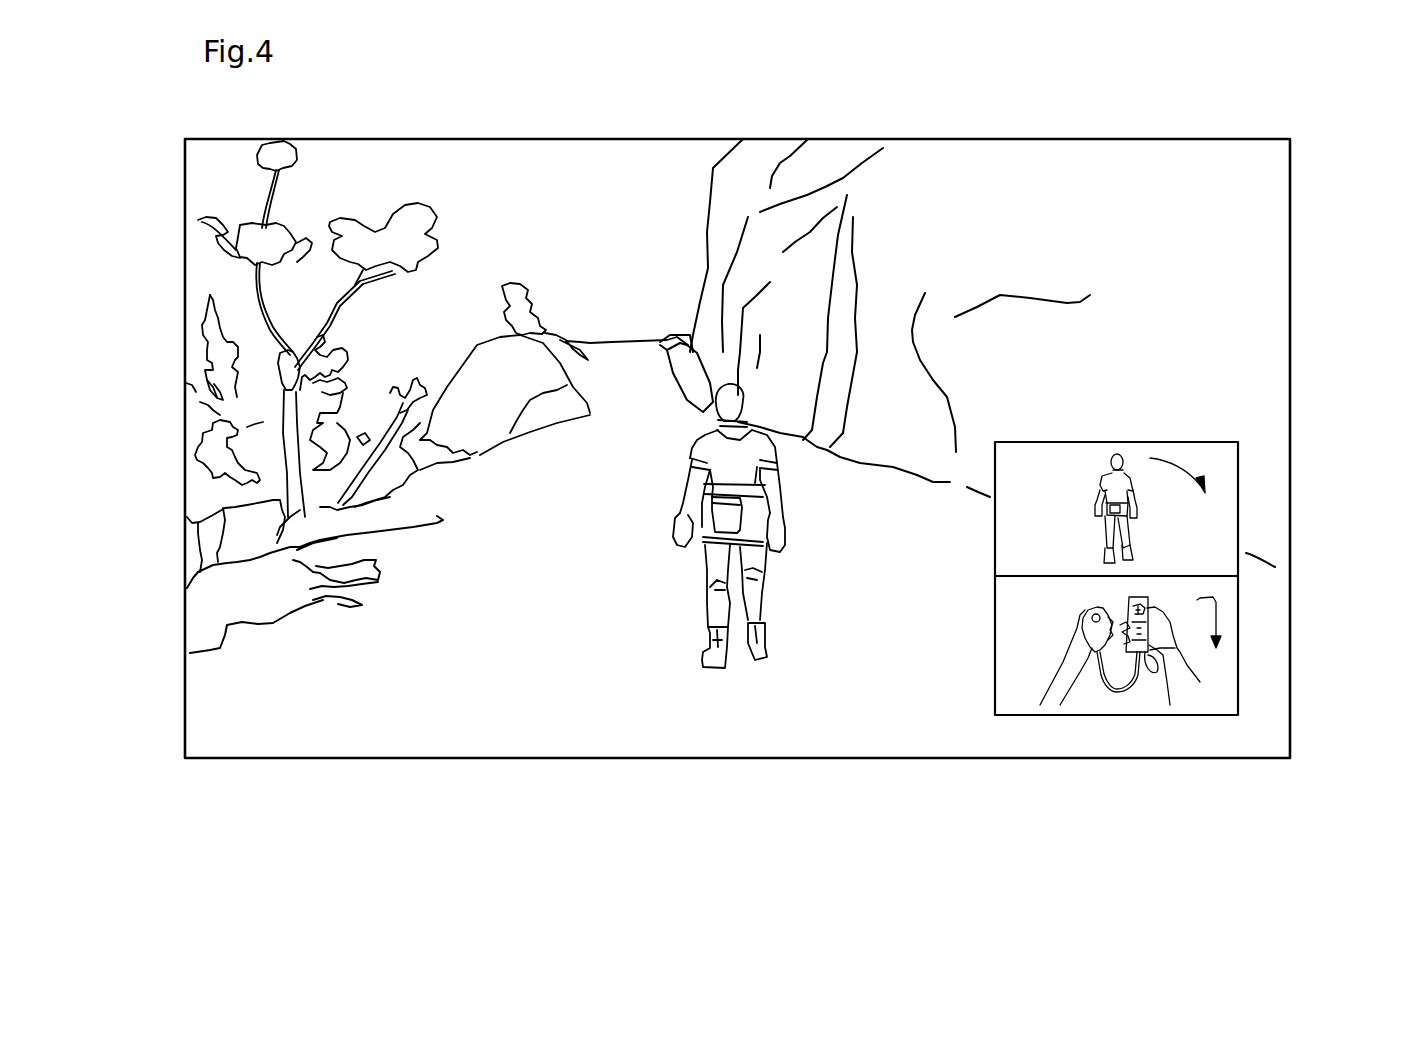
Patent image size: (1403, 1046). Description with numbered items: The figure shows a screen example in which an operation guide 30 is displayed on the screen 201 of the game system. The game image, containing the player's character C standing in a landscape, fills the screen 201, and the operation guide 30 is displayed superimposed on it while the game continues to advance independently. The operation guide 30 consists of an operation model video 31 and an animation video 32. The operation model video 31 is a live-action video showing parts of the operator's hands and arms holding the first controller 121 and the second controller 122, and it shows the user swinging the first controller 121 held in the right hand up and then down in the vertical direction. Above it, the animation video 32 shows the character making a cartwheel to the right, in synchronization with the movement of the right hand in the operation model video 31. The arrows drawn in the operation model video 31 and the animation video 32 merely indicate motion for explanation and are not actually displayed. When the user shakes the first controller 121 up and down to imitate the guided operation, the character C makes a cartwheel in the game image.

The screen 201 is at (1290, 251).
The character C is at (667, 511).
The operation guide 30 is at (1189, 578).
The operation model video 31 is at (1168, 645).
The animation video 32 is at (1238, 492).
The first controller 121 is at (1140, 603).
The second controller 122 is at (1095, 607).